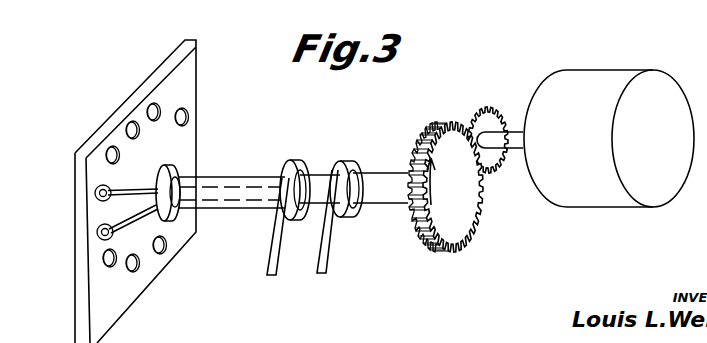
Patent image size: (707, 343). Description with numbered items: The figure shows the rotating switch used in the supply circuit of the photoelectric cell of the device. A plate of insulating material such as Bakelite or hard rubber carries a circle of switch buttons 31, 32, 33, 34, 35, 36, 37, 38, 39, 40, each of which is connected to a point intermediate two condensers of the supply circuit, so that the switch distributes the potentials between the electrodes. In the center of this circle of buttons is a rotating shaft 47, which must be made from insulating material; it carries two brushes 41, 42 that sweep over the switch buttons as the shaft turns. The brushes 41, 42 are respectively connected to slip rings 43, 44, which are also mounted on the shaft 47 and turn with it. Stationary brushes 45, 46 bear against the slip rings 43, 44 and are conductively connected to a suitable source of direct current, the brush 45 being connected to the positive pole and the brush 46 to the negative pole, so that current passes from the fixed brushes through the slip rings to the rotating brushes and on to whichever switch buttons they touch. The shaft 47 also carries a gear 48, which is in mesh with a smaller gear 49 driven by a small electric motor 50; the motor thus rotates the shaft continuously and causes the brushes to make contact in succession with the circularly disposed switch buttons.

The switch button 31 is at (205, 225).
The switch button 32 is at (160, 255).
The switch button 33 is at (134, 273).
The switch button 34 is at (110, 268).
The switch button 35 is at (100, 240).
The switch button 36 is at (95, 191).
The switch button 37 is at (110, 147).
The switch button 38 is at (129, 122).
The switch button 39 is at (160, 105).
The switch button 40 is at (188, 108).
The brush 41 is at (123, 222).
The brush 42 is at (118, 188).
The slip ring 43 is at (294, 161).
The slip ring 44 is at (347, 162).
The brush 45 is at (267, 268).
The brush 46 is at (327, 270).
The shaft 47 is at (228, 177).
The gear 48 is at (437, 124).
The smaller gear 49 is at (488, 108).
The small electric motor 50 is at (609, 138).